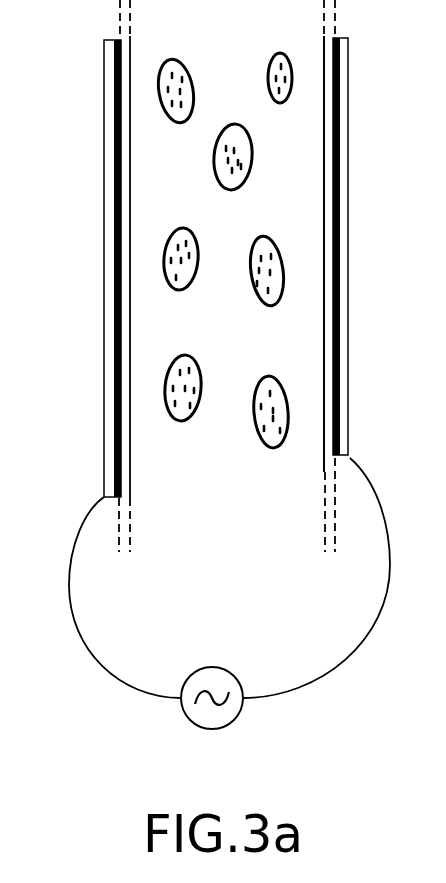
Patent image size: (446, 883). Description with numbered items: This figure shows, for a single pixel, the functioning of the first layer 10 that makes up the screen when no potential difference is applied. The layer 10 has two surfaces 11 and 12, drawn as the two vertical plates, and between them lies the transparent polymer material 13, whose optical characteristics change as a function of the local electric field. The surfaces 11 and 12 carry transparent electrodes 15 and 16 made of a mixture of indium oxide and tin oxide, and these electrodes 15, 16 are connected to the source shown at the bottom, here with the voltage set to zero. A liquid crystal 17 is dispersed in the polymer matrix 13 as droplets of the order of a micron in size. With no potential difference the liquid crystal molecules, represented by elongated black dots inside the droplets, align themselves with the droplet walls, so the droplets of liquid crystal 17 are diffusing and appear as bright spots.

The first layer 10 is at (290, 29).
The surface 11 is at (332, 174).
The surface 12 is at (127, 264).
The transparent polymer material 13 is at (300, 311).
The transparent electrode 15 is at (349, 418).
The transparent electrode 16 is at (113, 138).
The liquid crystal 17 is at (165, 396).